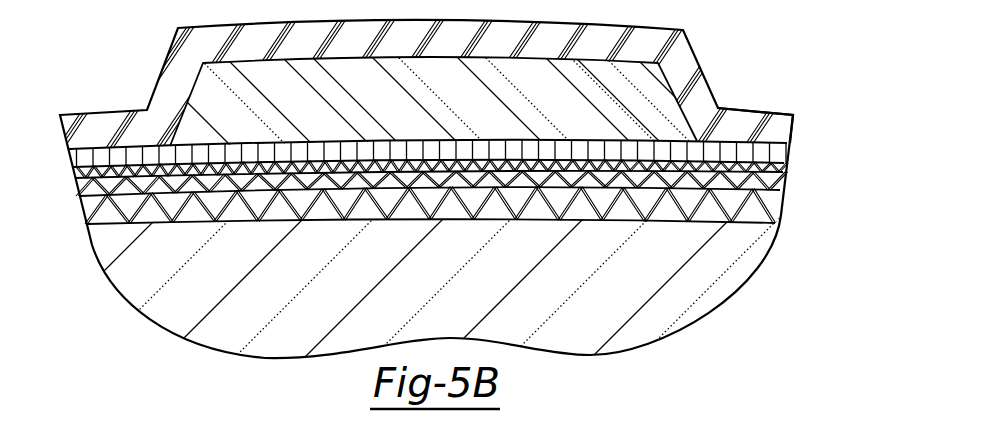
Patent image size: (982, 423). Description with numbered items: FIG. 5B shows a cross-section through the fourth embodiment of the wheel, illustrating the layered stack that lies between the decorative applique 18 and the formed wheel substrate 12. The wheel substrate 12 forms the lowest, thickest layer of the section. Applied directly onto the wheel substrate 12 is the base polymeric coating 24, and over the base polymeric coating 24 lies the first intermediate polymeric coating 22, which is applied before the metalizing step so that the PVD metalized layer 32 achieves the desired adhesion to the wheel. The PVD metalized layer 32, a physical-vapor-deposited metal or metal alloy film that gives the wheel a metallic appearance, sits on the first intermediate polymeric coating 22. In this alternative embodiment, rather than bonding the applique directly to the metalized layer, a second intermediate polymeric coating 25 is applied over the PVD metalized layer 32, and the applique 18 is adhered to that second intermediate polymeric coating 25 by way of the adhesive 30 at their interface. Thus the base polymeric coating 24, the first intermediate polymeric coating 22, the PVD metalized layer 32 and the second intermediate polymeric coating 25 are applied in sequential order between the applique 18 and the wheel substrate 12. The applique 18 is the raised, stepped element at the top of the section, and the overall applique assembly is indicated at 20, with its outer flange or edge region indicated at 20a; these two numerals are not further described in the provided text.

The trim component assembly 20 is at (763, 80).
The flange portion of trim component 20a is at (785, 124).
The decorative applique 18 is at (388, 106).
The adhesive 30 is at (487, 138).
The second intermediate polymeric coating 25 is at (793, 154).
The PVD metalized layer 32 is at (788, 177).
The first intermediate polymeric coating 22 is at (783, 193).
The base polymeric coating 24 is at (780, 218).
The wheel substrate 12 is at (438, 283).